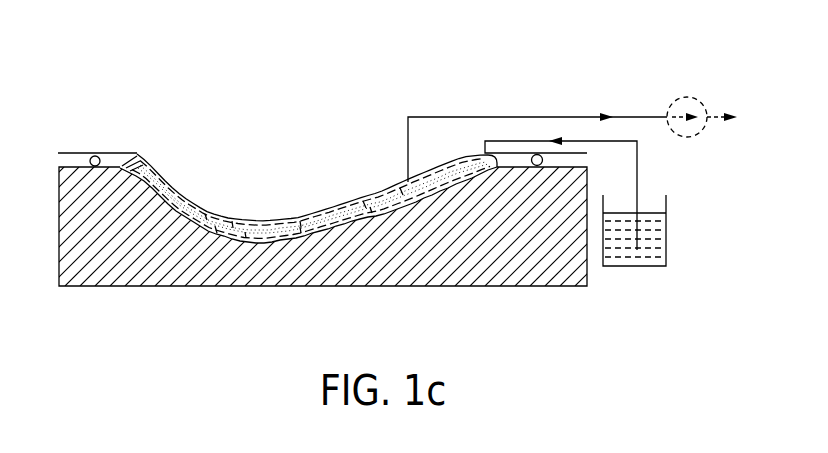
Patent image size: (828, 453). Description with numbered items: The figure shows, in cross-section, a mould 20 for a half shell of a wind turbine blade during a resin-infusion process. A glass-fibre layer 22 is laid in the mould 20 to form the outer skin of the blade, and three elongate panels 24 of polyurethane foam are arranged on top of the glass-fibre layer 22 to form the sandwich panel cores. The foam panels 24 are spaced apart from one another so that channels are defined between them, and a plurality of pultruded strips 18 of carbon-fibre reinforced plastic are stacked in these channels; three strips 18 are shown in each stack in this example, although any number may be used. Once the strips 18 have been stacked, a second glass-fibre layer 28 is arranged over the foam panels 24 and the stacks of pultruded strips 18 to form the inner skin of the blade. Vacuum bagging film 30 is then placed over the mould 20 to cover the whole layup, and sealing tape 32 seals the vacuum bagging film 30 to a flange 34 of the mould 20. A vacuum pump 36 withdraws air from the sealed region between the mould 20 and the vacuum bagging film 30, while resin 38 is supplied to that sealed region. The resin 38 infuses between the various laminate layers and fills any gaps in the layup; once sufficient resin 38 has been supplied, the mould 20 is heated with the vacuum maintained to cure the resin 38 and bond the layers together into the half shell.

The pultruded strips 18 is at (230, 216).
The mould 20 is at (97, 287).
The glass-fibre layer 22 is at (140, 160).
The elongate panels 24 is at (193, 203).
The second glass-fibre layer 28 is at (327, 213).
The vacuum bagging film 30 is at (172, 180).
The sealing tape 32 is at (97, 156).
The flange 34 is at (73, 162).
The vacuum pump 36 is at (690, 96).
The resin 38 is at (667, 232).